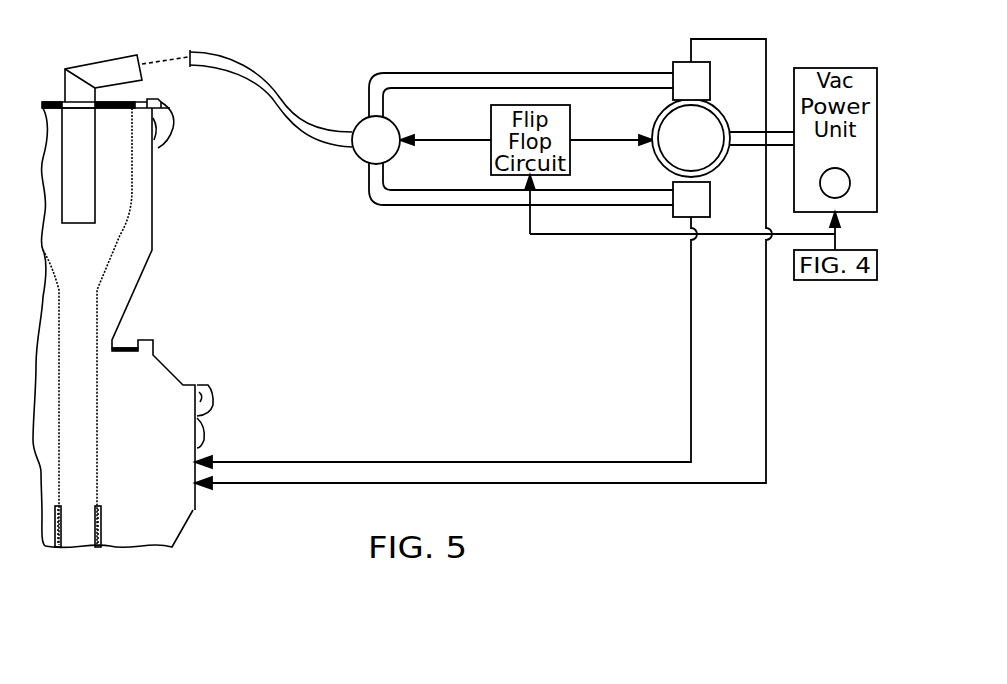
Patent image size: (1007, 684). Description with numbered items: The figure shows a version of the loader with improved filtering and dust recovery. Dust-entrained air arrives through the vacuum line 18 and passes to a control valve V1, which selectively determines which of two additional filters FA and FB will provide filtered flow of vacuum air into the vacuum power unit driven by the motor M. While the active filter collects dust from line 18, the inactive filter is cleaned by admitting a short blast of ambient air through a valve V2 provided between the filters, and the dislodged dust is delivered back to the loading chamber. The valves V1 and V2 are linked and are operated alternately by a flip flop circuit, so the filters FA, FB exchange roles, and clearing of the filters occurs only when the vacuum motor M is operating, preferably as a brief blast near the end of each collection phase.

The vacuum line 18 is at (262, 73).
The control valve V1 is at (376, 140).
The valve V2 is at (691, 138).
The filter FA is at (691, 81).
The filter FB is at (691, 200).
The motor M is at (835, 183).